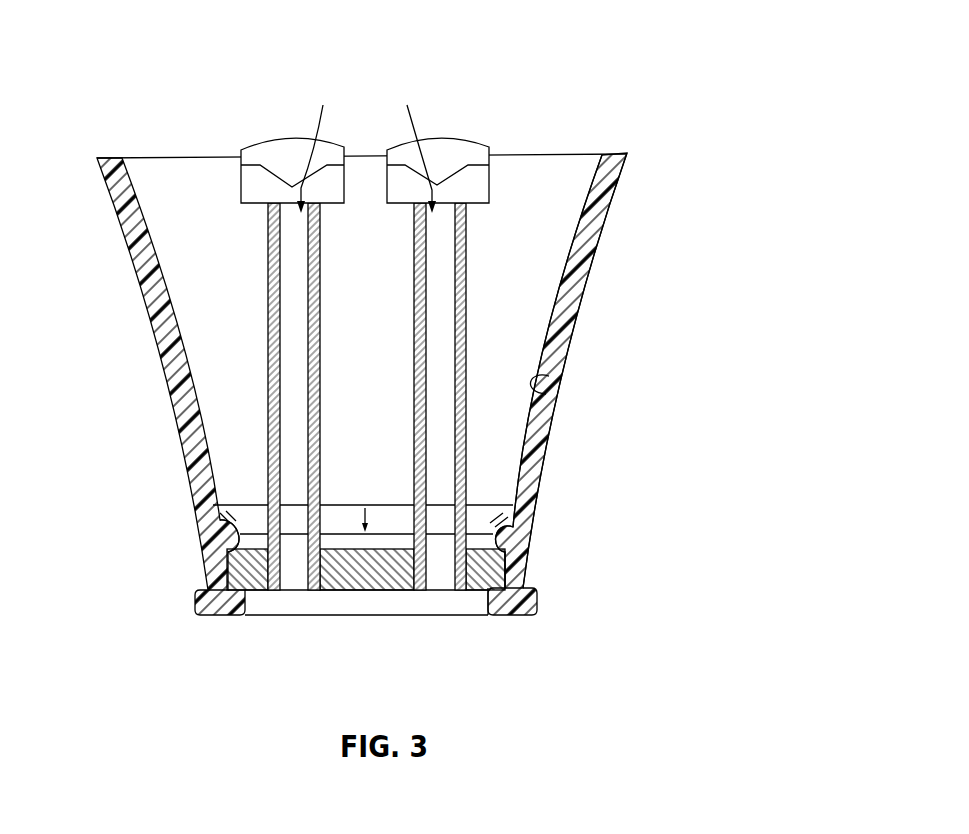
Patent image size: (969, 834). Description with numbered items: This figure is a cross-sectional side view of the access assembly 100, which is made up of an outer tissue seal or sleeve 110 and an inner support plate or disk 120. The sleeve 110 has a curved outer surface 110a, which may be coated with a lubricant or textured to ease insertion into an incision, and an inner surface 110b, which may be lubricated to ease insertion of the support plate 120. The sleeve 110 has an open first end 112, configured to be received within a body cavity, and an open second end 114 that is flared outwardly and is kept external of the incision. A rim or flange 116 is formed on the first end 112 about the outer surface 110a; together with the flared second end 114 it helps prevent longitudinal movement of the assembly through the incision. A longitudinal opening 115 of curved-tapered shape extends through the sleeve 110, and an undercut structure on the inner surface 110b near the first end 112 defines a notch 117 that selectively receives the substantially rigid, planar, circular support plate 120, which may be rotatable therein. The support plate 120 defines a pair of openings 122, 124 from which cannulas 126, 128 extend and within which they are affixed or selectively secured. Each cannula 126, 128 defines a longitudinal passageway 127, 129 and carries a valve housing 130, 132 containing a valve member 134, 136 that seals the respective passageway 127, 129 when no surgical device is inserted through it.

The access assembly 100 is at (660, 50).
The outer tissue seal or sleeve 110 is at (606, 274).
The outer surface of sleeve 110a is at (575, 322).
The inner surface of sleeve 110b is at (553, 385).
The first end 112 is at (534, 571).
The second end 114 is at (620, 187).
The longitudinal opening 115 is at (571, 164).
The rim or flange 116 is at (197, 607).
The notch 117 is at (227, 570).
The inner support plate or disk 120 is at (383, 590).
The opening 122 is at (300, 582).
The opening 124 is at (445, 583).
The cannula 126 is at (268, 283).
The cannula 128 is at (466, 281).
The longitudinal passageway 127 is at (319, 147).
The longitudinal passageway 129 is at (414, 146).
The valve housing 130 is at (240, 150).
The valve housing 132 is at (490, 145).
The valve member 134 is at (265, 165).
The valve member 136 is at (463, 165).